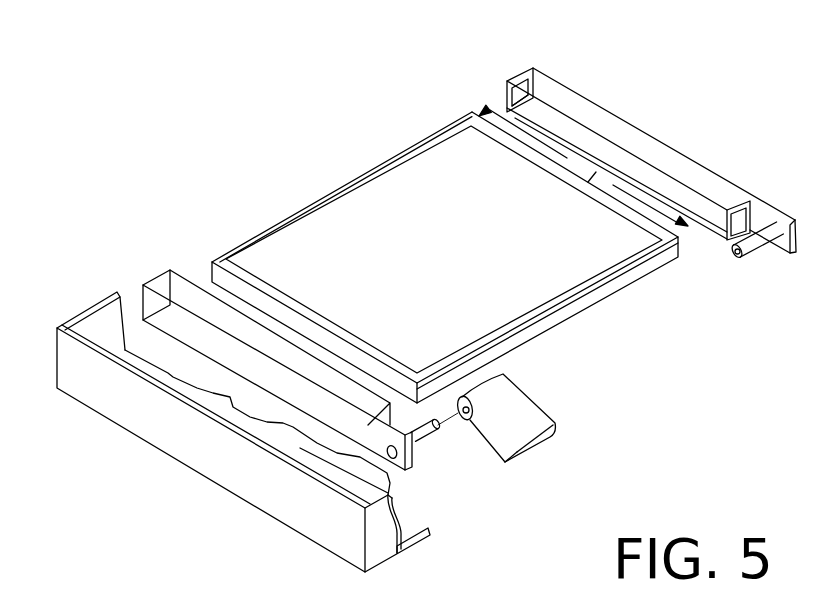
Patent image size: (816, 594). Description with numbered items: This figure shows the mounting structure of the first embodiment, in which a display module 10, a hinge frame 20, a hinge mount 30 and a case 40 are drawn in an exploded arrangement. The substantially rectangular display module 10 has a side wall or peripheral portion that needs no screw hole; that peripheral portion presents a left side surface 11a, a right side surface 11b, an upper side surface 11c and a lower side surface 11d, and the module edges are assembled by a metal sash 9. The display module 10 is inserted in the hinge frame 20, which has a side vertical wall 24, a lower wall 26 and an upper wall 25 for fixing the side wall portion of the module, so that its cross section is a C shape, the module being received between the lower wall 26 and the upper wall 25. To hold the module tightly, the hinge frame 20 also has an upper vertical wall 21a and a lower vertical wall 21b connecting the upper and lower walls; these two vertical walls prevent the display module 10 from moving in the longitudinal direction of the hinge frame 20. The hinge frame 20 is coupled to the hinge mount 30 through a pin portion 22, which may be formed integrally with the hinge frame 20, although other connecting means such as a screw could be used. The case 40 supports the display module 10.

The metal sash 9 is at (296, 212).
The display module 10 is at (364, 207).
The left side surface 11a is at (207, 273).
The right side surface 11b is at (485, 107).
The upper side surface 11c is at (416, 143).
The lower side surface 11d is at (560, 313).
The hinge frame 20 is at (675, 140).
The upper vertical wall 21a is at (488, 104).
The lower vertical wall 21b is at (733, 230).
The pin portion 22 is at (758, 247).
The side vertical wall 24 is at (170, 308).
The upper wall 25 is at (563, 100).
The lower wall 26 is at (698, 220).
The hinge mount 30 is at (522, 405).
The case 40 is at (193, 450).